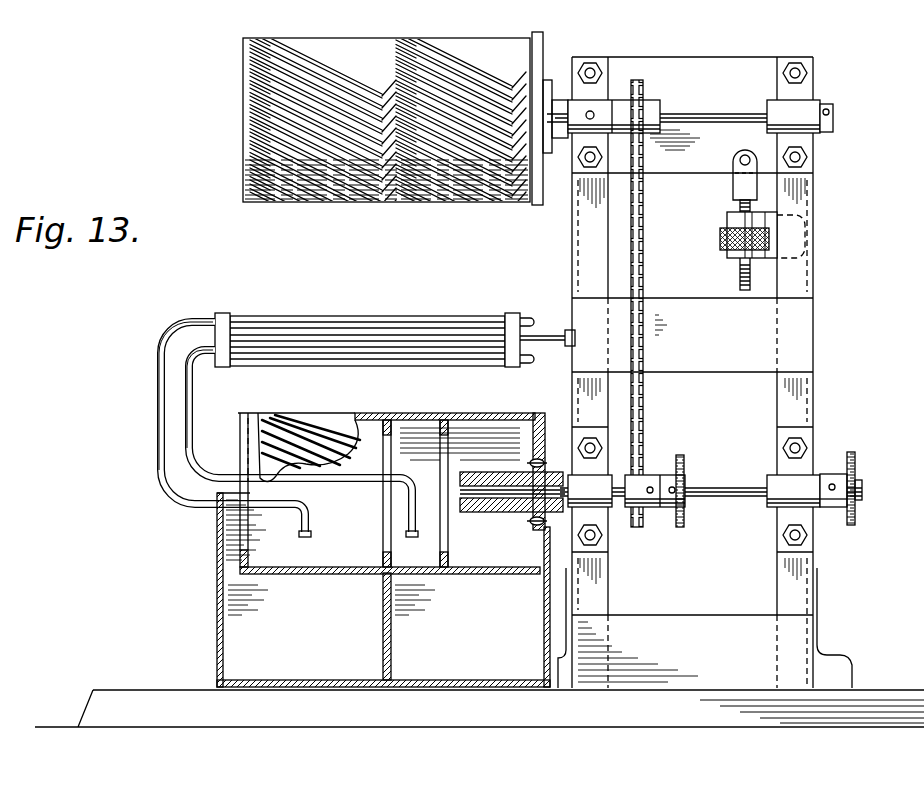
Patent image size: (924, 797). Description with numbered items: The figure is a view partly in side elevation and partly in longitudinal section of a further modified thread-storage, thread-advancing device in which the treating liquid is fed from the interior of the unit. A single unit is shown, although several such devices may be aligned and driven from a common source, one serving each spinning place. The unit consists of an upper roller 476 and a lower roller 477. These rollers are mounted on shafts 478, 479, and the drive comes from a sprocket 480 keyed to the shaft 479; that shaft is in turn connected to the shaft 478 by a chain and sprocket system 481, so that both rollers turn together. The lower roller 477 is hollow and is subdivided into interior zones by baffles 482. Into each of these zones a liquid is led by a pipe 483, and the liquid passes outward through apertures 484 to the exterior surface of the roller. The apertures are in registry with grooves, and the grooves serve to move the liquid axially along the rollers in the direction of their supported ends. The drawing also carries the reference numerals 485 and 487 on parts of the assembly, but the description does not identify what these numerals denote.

The upper roller 476 is at (252, 202).
The lower roller 477 is at (260, 574).
The shaft 478 is at (712, 112).
The shaft 479 is at (714, 487).
The sprocket 480 is at (852, 455).
The chain and sprocket system 481 is at (650, 235).
The baffles 482 is at (447, 572).
The pipe 483 is at (192, 406).
The apertures 484 is at (274, 422).
The cover plate 485 is at (346, 416).
The adjusting screw 487 is at (726, 247).